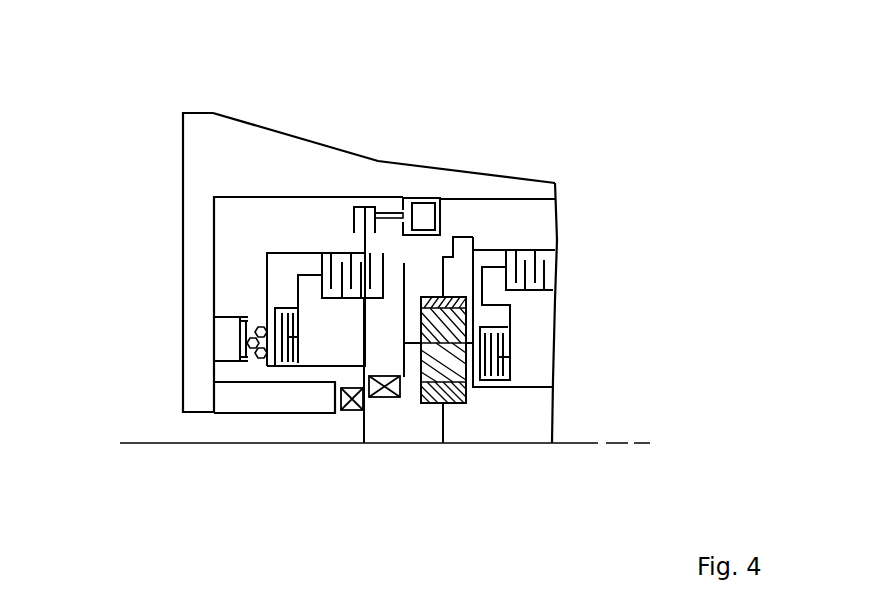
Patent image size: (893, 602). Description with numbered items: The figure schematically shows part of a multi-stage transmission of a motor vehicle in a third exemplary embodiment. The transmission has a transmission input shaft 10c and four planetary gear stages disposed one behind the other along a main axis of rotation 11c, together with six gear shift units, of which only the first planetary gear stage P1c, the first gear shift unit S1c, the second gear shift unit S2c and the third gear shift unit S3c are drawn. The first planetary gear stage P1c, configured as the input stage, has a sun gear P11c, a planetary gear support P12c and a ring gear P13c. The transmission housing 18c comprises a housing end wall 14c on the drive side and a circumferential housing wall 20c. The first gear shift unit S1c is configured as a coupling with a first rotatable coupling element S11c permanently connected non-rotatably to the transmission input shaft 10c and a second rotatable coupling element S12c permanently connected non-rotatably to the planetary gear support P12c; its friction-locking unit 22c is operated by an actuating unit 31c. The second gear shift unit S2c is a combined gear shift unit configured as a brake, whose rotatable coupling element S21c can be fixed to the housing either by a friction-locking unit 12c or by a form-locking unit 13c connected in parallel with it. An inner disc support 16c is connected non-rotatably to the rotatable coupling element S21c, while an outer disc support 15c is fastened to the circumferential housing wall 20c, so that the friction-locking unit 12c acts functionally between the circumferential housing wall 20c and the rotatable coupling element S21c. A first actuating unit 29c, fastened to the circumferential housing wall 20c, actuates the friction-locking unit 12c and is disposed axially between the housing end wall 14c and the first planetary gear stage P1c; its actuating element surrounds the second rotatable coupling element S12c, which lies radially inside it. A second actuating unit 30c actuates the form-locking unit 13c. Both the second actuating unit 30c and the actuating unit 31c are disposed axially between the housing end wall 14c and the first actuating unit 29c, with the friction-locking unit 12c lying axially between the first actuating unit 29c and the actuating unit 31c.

The housing end wall 14c is at (198, 108).
The circumferential housing wall 20c is at (228, 163).
The friction-locking unit 22c is at (322, 243).
The inner disc support 16c is at (287, 252).
The first gear shift unit S1c is at (250, 256).
The second actuating unit 30c is at (206, 333).
The form-locking unit 13c is at (253, 371).
The actuating unit 31c is at (298, 376).
The first rotatable coupling element S11c is at (363, 327).
The second rotatable coupling element S12c is at (405, 265).
The planetary gear support P12c is at (420, 396).
The sun gear P11c is at (467, 396).
The first planetary gear stage P1c is at (443, 450).
The transmission input shaft 10c is at (551, 445).
The main axis of rotation 11c is at (622, 445).
The friction-locking unit 12c is at (346, 203).
The outer disc support 15c is at (373, 206).
The rotatable coupling element S21c is at (389, 210).
The transmission housing 18c is at (434, 181).
The second gear shift unit S2c is at (446, 196).
The first actuating unit 29c is at (450, 215).
The third gear shift unit S3c is at (568, 272).
The ring gear P13c is at (475, 293).